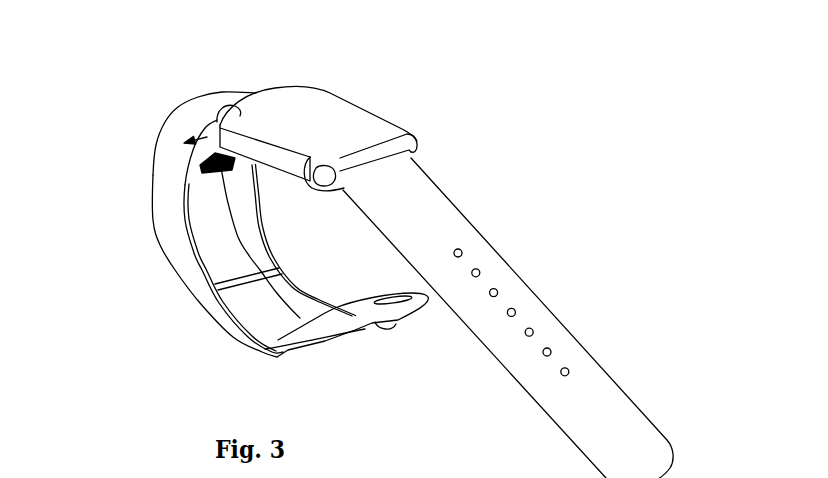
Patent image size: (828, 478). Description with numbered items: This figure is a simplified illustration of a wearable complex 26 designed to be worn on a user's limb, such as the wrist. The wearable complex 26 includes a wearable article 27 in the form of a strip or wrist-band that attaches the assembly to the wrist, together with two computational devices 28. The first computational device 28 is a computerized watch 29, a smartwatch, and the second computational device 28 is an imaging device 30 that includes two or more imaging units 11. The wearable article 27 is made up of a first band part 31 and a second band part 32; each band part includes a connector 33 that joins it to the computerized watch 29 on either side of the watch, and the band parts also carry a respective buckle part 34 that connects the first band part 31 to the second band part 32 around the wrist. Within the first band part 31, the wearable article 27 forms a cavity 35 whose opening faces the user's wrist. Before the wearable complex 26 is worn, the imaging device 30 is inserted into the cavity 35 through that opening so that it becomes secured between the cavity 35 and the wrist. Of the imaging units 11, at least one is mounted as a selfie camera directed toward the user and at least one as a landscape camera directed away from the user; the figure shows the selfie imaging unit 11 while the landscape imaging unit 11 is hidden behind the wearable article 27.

The imaging unit 11 is at (165, 107).
The wearable complex 26 is at (478, 113).
The wearable article 27 is at (142, 140).
The computational device 28 is at (369, 101).
The computerized watch 29 is at (326, 94).
The imaging device 30 is at (254, 225).
The first band part 31 is at (139, 222).
The second band part 32 is at (566, 307).
The connector 33 is at (424, 153).
The buckle part 34 is at (369, 339).
The cavity 35 is at (187, 252).